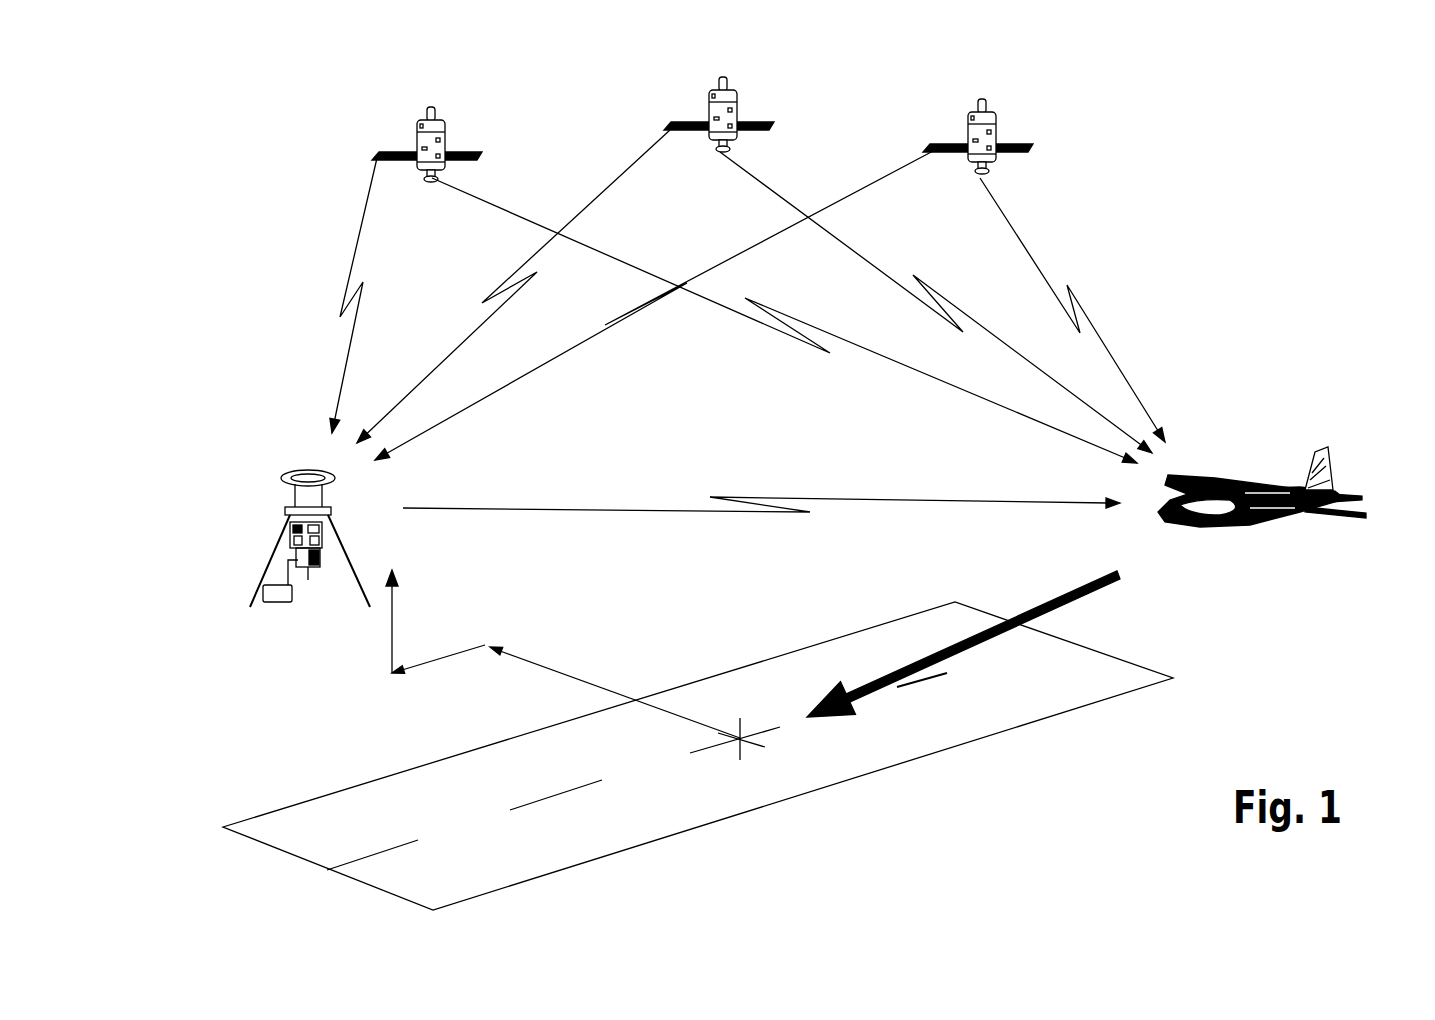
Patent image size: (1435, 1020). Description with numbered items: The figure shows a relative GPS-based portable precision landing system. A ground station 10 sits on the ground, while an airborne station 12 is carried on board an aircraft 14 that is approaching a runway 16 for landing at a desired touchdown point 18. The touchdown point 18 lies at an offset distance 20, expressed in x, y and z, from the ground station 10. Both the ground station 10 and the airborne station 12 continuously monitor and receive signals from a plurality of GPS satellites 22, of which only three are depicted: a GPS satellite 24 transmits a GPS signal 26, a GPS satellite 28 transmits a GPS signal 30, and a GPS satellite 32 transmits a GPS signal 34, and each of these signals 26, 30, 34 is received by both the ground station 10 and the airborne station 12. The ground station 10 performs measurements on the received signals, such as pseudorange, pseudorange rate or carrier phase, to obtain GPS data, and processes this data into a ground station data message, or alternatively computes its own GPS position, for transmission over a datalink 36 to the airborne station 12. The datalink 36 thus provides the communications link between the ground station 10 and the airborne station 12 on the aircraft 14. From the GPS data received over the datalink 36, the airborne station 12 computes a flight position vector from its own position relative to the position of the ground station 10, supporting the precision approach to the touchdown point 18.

The ground station 10 is at (280, 522).
The airborne station 12 is at (1284, 507).
The aircraft 14 is at (1330, 466).
The runway 16 is at (982, 712).
The touchdown point 18 is at (737, 742).
The offset distance 20 is at (469, 708).
The plurality of GPS satellites 22 is at (305, 126).
The GPS satellite 24 is at (483, 152).
The GPS signal 26 is at (352, 252).
The GPS satellite 28 is at (777, 126).
The GPS signal 30 is at (517, 270).
The GPS satellite 32 is at (1038, 150).
The GPS signal 34 is at (592, 340).
The datalink 36 is at (888, 497).